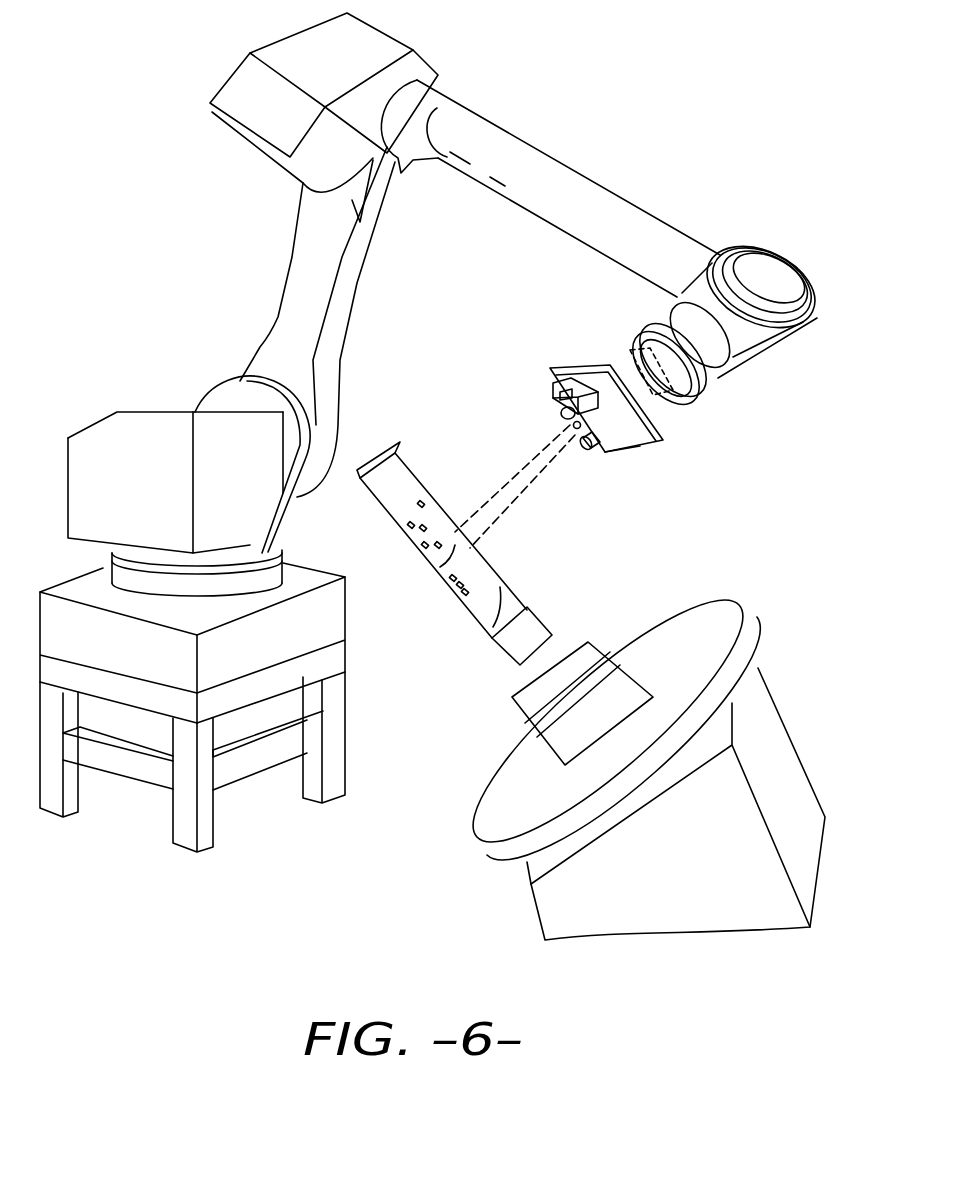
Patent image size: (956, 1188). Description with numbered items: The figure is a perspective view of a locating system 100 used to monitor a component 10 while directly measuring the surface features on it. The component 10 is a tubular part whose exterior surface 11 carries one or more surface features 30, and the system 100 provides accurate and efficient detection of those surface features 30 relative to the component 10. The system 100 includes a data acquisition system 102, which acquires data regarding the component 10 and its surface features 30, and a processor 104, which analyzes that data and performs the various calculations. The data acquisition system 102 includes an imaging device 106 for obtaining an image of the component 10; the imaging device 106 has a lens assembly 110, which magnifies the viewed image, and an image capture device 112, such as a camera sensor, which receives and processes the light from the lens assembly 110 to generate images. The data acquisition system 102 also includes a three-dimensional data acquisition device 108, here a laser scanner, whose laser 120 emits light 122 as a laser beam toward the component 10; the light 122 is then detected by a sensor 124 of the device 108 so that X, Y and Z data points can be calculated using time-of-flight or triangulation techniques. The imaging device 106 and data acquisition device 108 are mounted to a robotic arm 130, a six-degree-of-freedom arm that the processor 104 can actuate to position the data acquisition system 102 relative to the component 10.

The locating system 100 is at (140, 160).
The robotic arm 130 is at (257, 283).
The data acquisition system 102 is at (571, 414).
The processor 104 is at (667, 410).
The imaging device 106 is at (557, 403).
The three-dimensional data acquisition device 108 is at (573, 447).
The lens assembly 110 is at (560, 417).
The image capture device 112 is at (573, 373).
The laser 120 is at (563, 440).
The light 122 is at (513, 500).
The sensor 124 is at (637, 450).
The component 10 is at (505, 595).
The exterior surface 11 is at (400, 487).
The surface feature 30 is at (395, 530).